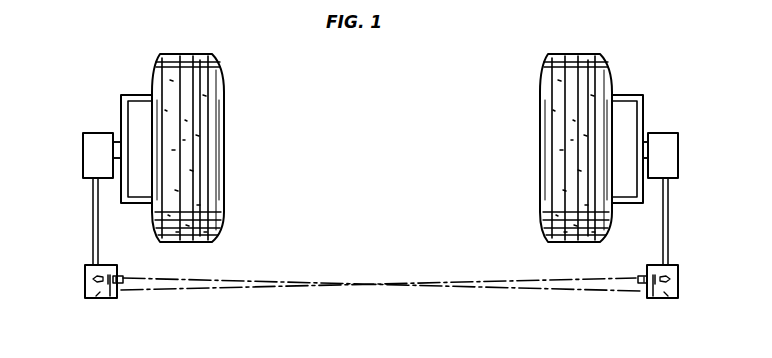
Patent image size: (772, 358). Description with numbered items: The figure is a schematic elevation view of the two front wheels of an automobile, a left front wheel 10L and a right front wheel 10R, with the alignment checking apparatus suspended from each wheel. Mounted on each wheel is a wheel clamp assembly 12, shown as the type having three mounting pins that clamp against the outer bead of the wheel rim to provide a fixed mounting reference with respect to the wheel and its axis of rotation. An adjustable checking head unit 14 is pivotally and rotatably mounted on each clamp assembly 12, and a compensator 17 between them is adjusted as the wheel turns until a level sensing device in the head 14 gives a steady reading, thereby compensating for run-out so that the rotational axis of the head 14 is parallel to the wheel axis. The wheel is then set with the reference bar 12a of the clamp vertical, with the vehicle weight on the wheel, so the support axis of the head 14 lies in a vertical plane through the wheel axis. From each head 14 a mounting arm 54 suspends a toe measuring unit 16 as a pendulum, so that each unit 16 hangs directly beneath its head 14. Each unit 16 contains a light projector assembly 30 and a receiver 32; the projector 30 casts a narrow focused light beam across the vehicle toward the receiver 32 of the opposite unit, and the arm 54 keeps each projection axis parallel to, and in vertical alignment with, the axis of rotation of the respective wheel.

The left front wheel 10L is at (226, 76).
The right front wheel 10R is at (542, 99).
The wheel clamp assembly 12 is at (121, 106).
The reference bar 12a is at (121, 116).
The adjustable checking head unit 14 is at (86, 146).
The toe measuring unit 16 is at (86, 282).
The compensator 17 is at (114, 156).
The light projector assembly 30 is at (102, 289).
The receiver 32 is at (115, 298).
The mounting arm 54 is at (93, 205).